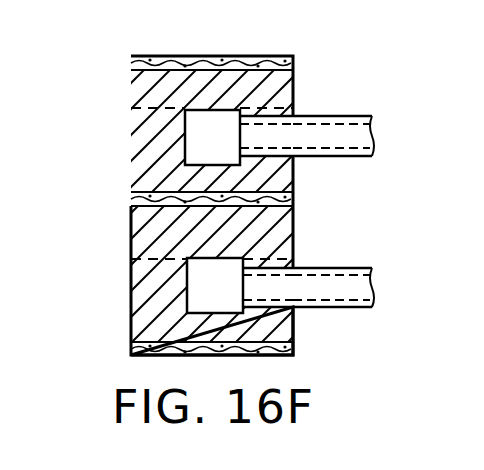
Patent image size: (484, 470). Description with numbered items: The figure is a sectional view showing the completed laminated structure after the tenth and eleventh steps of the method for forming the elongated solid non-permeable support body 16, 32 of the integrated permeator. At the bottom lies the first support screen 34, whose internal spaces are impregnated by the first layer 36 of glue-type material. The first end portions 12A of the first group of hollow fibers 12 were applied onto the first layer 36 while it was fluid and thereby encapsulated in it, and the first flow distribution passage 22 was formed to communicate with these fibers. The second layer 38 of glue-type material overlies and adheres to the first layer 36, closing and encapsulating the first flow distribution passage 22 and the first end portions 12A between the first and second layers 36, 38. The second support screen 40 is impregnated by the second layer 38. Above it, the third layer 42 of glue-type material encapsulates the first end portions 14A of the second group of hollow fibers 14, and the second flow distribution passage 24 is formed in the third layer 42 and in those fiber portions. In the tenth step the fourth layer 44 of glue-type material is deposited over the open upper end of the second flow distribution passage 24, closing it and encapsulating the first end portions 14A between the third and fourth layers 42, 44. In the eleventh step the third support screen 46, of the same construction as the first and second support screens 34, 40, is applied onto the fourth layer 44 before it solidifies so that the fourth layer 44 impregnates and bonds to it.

The hollow fibers of the first group 12 is at (330, 308).
The first end portions of the hollow fibers 12A is at (272, 262).
The hollow fibers of the second group 14 is at (330, 157).
The first end portions of the hollow fibers 14A is at (272, 108).
The elongated solid non-permeable support body 16 is at (133, 232).
The first flow distribution passage 22 is at (215, 286).
The second flow distribution passage 24 is at (212, 138).
The elongated solid non-permeable support body 32 is at (212, 280).
The first support screen 34 is at (133, 348).
The first layer of glue-type material 36 is at (133, 315).
The second layer of glue-type material 38 is at (133, 218).
The second support screen 40 is at (133, 198).
The third layer of glue-type material 42 is at (140, 137).
The fourth layer of glue-type material 44 is at (132, 84).
The third support screen 46 is at (277, 56).